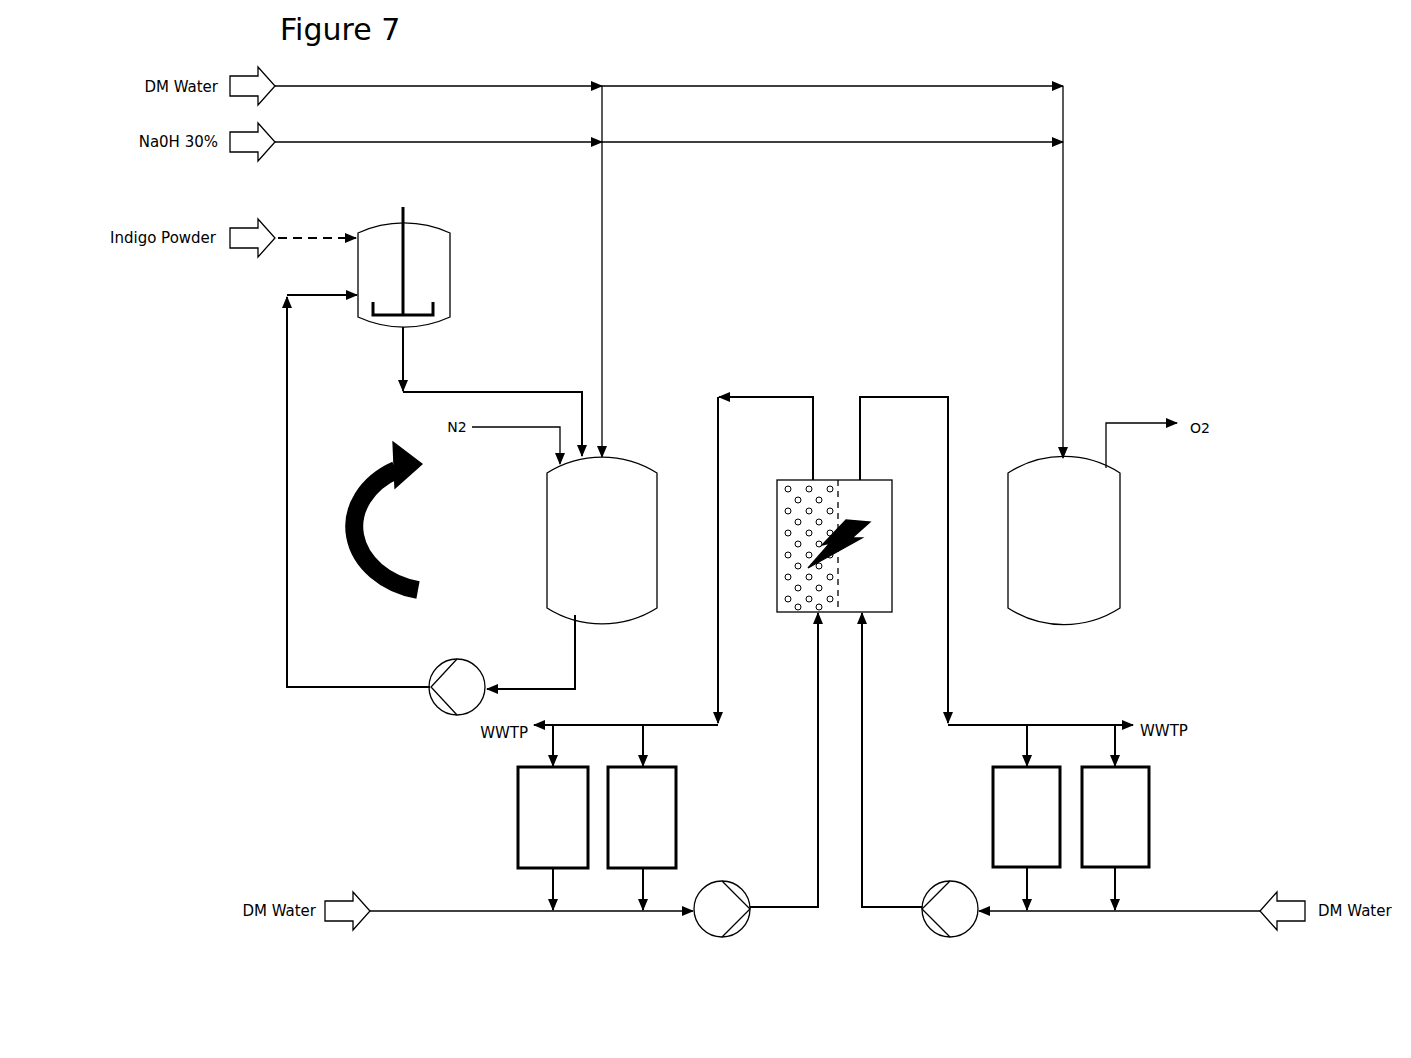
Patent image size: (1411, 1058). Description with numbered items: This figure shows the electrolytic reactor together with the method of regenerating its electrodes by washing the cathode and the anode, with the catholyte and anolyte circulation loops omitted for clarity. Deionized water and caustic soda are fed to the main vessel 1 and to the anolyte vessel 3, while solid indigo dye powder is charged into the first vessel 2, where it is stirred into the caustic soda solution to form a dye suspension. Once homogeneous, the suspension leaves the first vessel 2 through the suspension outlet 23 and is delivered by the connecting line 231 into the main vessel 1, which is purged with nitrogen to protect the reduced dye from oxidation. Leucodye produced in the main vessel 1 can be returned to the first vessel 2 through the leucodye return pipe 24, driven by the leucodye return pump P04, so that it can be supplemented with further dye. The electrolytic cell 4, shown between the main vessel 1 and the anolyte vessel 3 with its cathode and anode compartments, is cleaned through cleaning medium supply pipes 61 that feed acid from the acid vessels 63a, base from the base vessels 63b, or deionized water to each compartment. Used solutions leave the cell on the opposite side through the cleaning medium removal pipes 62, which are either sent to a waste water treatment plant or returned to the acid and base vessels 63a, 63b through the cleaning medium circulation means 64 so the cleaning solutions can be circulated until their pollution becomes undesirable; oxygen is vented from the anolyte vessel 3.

The main vessel 1 is at (602, 540).
The first vessel 2 is at (404, 267).
The anolyte vessel 3 is at (1064, 540).
The electrolytic cell 4 is at (881, 468).
The suspension outlet 23 is at (407, 330).
The feed line to reactor 231 is at (508, 392).
The leucodye return pipe 24 is at (287, 515).
The cleaning medium supply pipe 61 is at (813, 723).
The cleaning medium removal pipe 62 is at (806, 391).
The acid vessel 63a is at (789, 838).
The base vessel 63b is at (878, 838).
The cleaning medium circulation means 64 is at (557, 742).
The leucodye return pump P04 is at (455, 685).